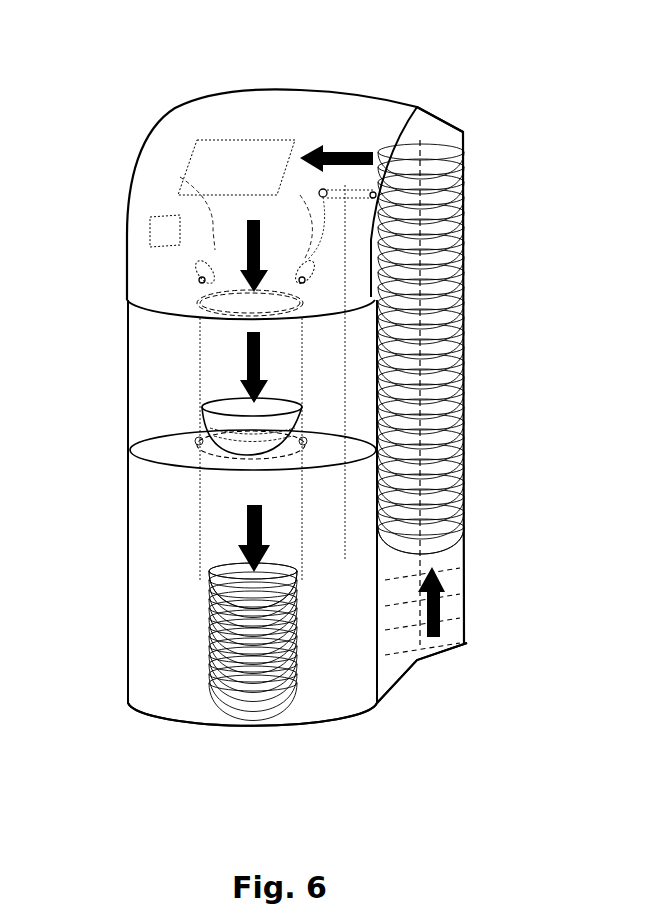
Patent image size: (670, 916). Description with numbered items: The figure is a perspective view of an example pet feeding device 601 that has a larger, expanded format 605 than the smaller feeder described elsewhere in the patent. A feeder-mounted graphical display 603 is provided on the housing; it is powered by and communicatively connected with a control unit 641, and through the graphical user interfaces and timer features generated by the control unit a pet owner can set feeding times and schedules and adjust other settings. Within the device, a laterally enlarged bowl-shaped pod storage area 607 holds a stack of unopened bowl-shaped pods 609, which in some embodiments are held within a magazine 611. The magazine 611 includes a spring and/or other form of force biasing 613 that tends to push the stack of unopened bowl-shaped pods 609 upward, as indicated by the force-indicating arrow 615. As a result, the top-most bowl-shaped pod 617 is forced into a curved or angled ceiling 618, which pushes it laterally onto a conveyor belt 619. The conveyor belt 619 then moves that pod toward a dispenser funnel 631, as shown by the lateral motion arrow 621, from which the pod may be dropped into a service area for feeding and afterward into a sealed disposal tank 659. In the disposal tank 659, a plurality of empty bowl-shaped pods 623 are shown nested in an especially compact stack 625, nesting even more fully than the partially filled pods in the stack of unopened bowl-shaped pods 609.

The pet feeding device 601 is at (78, 763).
The feeder-mounted graphical display 603 is at (198, 160).
The expanded format 605 is at (442, 699).
The bowl-shaped pod storage area 607 is at (467, 553).
The stack of unopened bowl-shaped pods 609 is at (484, 392).
The magazine 611 is at (457, 600).
The spring and/or other form of force biasing 613 is at (448, 633).
The force-indicating arrow 615 is at (445, 582).
The top-most bowl-shaped pod 617 is at (453, 162).
The curved or angled ceiling 618 is at (440, 118).
The conveyor belt 619 is at (323, 193).
The lateral motion arrow 621 is at (347, 150).
The empty bowl-shaped pods 623 is at (197, 575).
The compact stack 625 is at (189, 642).
The dispenser funnel 631 is at (215, 228).
The control unit 641 is at (148, 233).
The disposal tank 659 is at (325, 677).